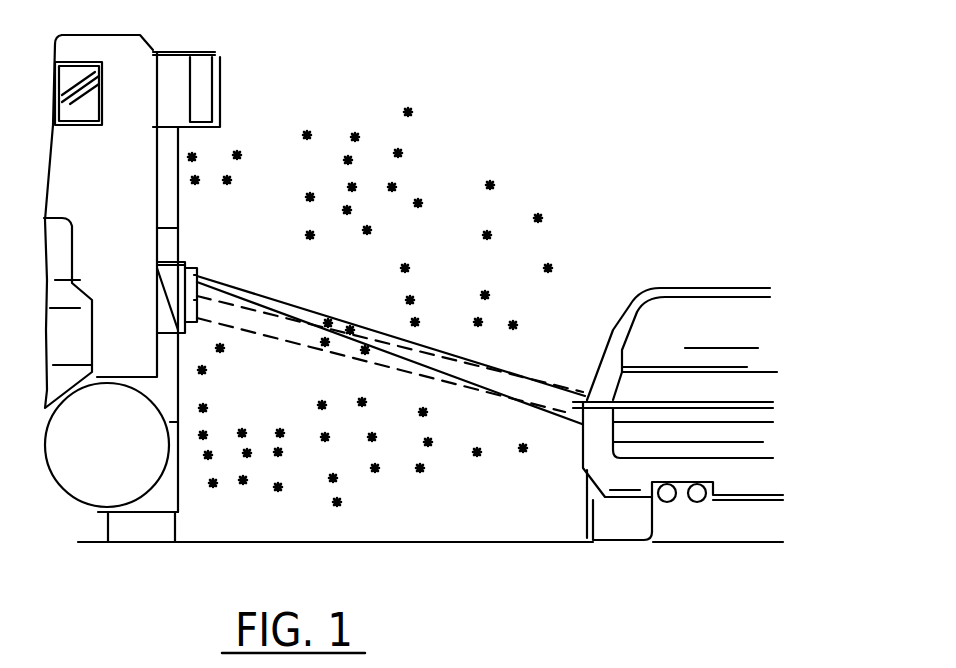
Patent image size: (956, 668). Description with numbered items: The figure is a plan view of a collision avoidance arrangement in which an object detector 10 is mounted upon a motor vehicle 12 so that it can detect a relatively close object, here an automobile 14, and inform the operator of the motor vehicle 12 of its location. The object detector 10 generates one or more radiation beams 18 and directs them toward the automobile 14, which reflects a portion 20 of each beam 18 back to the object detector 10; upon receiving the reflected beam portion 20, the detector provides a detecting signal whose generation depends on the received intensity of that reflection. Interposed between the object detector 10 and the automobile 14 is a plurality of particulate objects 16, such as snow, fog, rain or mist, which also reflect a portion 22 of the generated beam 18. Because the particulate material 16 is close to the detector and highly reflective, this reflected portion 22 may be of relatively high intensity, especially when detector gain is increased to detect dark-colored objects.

The object detector 10 is at (190, 263).
The motor vehicle 12 is at (173, 78).
The automobile 14 is at (688, 285).
The particulate objects 16 is at (400, 152).
The radiation beam 18 is at (318, 316).
The reflected beam portion 20 is at (291, 337).
The reflected beam portion 22 is at (228, 302).